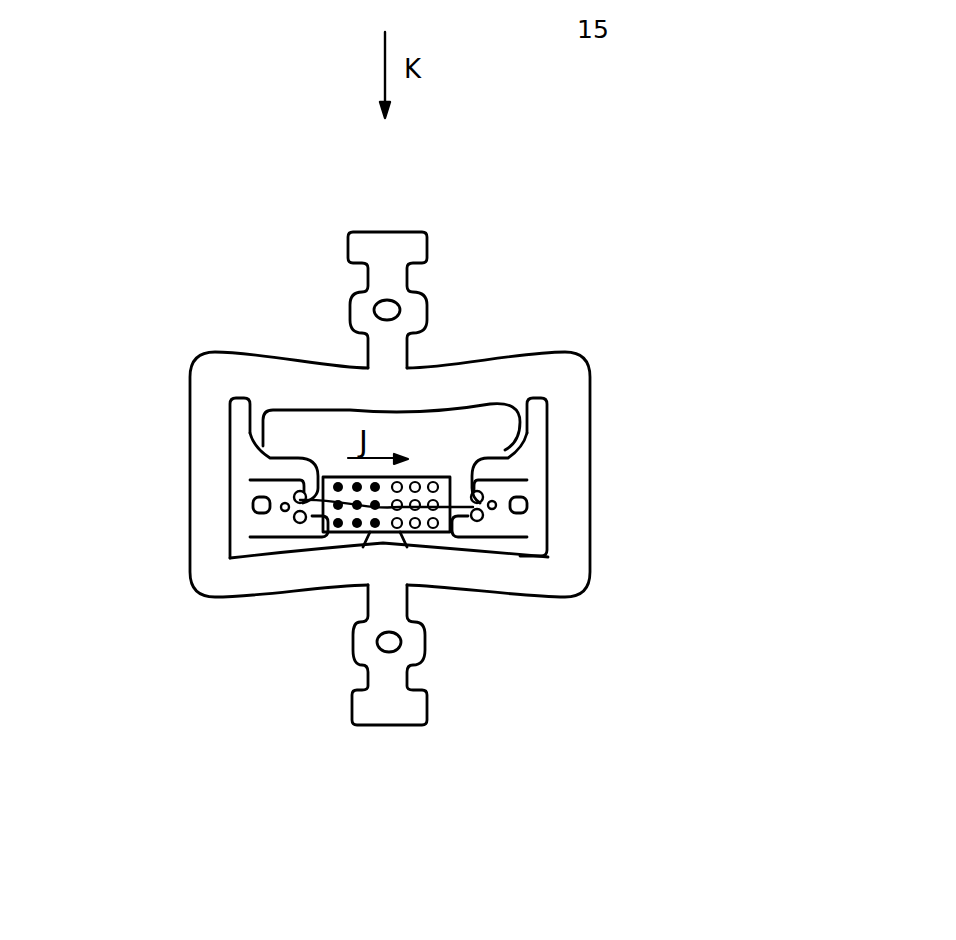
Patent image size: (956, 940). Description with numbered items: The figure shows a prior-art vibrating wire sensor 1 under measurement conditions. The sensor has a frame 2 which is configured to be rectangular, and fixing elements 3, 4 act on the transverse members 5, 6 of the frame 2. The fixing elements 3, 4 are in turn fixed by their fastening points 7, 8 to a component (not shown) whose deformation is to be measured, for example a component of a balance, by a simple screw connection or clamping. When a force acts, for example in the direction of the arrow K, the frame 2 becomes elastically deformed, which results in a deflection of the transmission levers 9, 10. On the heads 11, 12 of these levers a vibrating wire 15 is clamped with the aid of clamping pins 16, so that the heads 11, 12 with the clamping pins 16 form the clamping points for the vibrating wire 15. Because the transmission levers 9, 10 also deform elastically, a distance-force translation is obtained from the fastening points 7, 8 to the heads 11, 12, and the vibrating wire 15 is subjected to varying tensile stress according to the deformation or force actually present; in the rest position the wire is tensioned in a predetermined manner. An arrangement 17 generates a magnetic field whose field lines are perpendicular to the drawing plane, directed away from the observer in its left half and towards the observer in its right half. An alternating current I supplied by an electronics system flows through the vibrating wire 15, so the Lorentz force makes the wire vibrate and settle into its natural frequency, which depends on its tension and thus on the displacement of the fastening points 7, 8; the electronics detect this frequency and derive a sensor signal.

The vibrating wire sensor 1 is at (555, 217).
The frame 2 is at (155, 425).
The fixing element 3 is at (380, 247).
The fixing element 4 is at (378, 703).
The transverse member 5 is at (366, 401).
The transverse member 6 is at (431, 575).
The fastening point 7 is at (383, 307).
The fastening point 8 is at (393, 645).
The transmission lever 9 is at (297, 430).
The transmission lever 10 is at (494, 430).
The head 11 is at (272, 523).
The head 12 is at (548, 547).
The vibrating wire 15 is at (350, 500).
The clamping pins 16 is at (300, 500).
The arrangement 17 is at (403, 477).